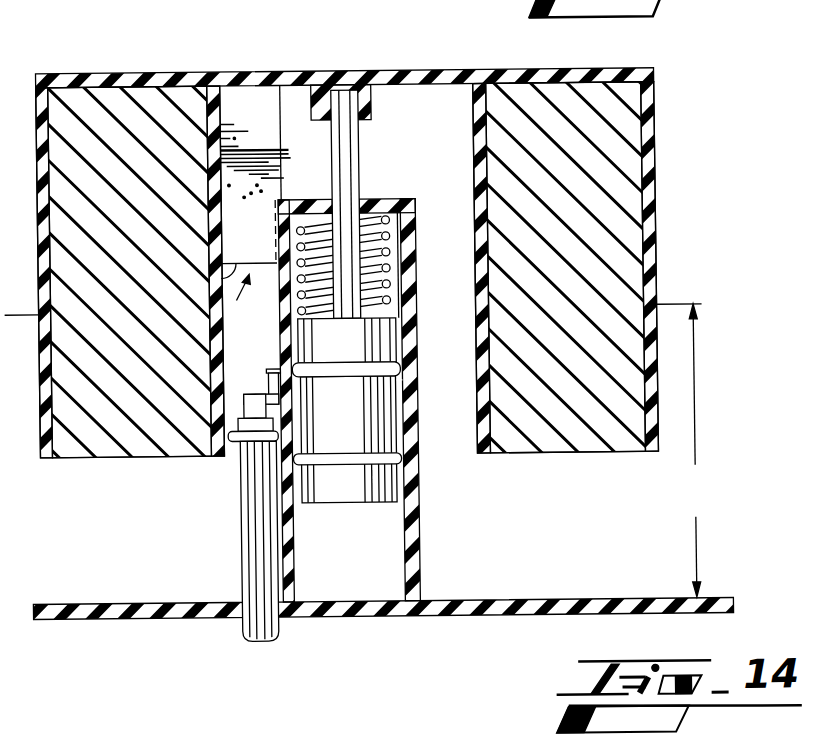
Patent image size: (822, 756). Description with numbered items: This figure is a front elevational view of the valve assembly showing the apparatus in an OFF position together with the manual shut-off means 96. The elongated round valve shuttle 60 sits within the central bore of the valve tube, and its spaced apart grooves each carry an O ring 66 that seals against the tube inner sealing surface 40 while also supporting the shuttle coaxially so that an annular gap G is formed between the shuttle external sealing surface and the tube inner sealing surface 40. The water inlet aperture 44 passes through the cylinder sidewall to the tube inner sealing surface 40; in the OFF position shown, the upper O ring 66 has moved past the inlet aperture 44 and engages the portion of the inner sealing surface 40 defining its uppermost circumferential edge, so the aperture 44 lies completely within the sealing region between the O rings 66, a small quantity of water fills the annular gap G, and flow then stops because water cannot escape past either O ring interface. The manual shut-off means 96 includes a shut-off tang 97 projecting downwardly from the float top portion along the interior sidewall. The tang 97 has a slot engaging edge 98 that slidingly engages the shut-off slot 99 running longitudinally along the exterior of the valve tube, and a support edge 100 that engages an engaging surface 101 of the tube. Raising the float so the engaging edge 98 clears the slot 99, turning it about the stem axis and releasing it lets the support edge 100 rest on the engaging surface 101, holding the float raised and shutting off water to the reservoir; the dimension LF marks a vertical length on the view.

The shut-off tang 97 is at (216, 129).
The slot engaging edge 98 is at (306, 84).
The support edge 100 is at (222, 288).
The engaging surface 101 is at (322, 198).
The manual shut-off means 96 is at (278, 319).
The shut-off slot 99 is at (243, 393).
The water inlet aperture 44 is at (300, 380).
The O ring 66 is at (418, 355).
The valve shuttle 60 is at (417, 443).
The annular gap G is at (417, 384).
The tube inner sealing surface 40 is at (402, 539).
The free length dimension LF is at (684, 451).